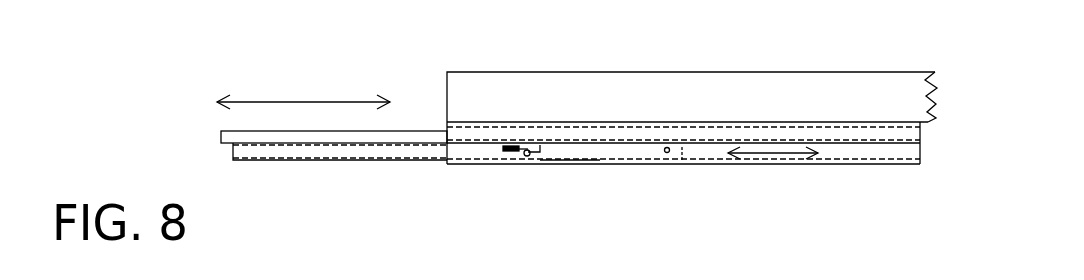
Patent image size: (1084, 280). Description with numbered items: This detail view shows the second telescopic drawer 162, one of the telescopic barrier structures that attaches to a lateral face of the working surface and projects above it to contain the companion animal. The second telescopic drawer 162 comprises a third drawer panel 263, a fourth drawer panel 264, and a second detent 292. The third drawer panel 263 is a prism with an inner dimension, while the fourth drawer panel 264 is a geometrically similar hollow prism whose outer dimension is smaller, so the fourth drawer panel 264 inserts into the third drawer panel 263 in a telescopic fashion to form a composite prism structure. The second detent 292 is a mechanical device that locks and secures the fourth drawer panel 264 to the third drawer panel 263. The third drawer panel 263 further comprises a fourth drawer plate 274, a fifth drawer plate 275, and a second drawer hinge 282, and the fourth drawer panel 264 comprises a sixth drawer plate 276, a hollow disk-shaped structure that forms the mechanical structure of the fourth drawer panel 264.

The second telescopic drawer 162 is at (218, 141).
The third drawer panel 263 is at (245, 160).
The fourth drawer plate 274 is at (351, 152).
The second drawer hinge 282 is at (530, 152).
The fifth drawer plate 275 is at (562, 155).
The second detent 292 is at (667, 150).
The fourth drawer panel 264 is at (768, 164).
The sixth drawer plate 276 is at (913, 155).